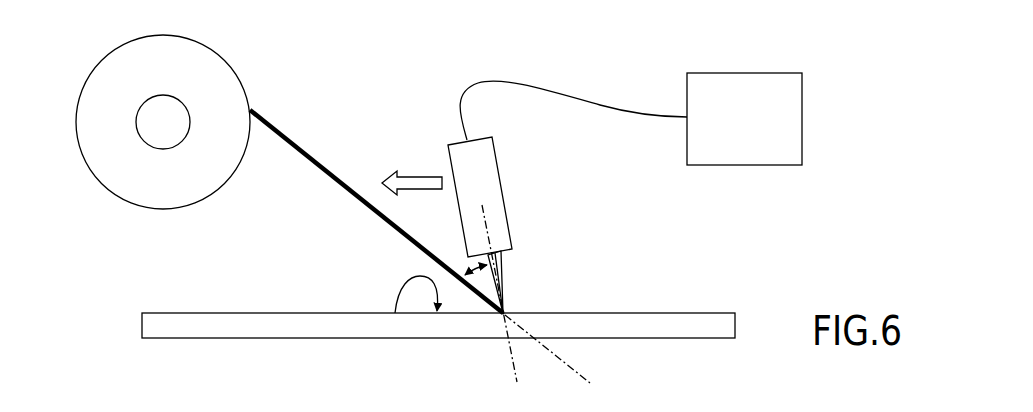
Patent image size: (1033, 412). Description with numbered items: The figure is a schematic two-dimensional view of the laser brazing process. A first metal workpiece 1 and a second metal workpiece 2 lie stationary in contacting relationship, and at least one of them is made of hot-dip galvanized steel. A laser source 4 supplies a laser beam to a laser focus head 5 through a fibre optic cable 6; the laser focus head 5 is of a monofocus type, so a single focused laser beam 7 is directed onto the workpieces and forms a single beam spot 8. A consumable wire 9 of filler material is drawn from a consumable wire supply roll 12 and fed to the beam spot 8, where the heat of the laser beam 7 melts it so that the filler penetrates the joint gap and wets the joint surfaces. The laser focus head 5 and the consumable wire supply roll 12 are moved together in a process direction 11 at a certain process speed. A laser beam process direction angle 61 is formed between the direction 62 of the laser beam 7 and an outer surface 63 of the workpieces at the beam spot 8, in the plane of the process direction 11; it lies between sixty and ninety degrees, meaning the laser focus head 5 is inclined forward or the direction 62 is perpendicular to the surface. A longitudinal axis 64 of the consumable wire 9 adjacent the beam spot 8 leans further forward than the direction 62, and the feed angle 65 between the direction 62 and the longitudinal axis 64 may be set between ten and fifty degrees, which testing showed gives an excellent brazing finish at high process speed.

The first metal workpiece 1 is at (438, 353).
The second metal workpiece 2 is at (310, 325).
The laser source 4 is at (755, 97).
The laser focus head 5 is at (480, 153).
The fibre optic cable 6 is at (575, 98).
The laser beam 7 is at (502, 270).
The beam spot 8 is at (506, 311).
The consumable wire 9 is at (268, 118).
The process direction 11 is at (422, 173).
The consumable wire supply roll 12 is at (100, 82).
The laser beam process direction angle 61 is at (395, 313).
The direction of the laser beam 62 is at (485, 212).
The outer surface 63 is at (367, 311).
The longitudinal axis of the consumable wire 64 is at (567, 364).
The feed angle 65 is at (480, 280).